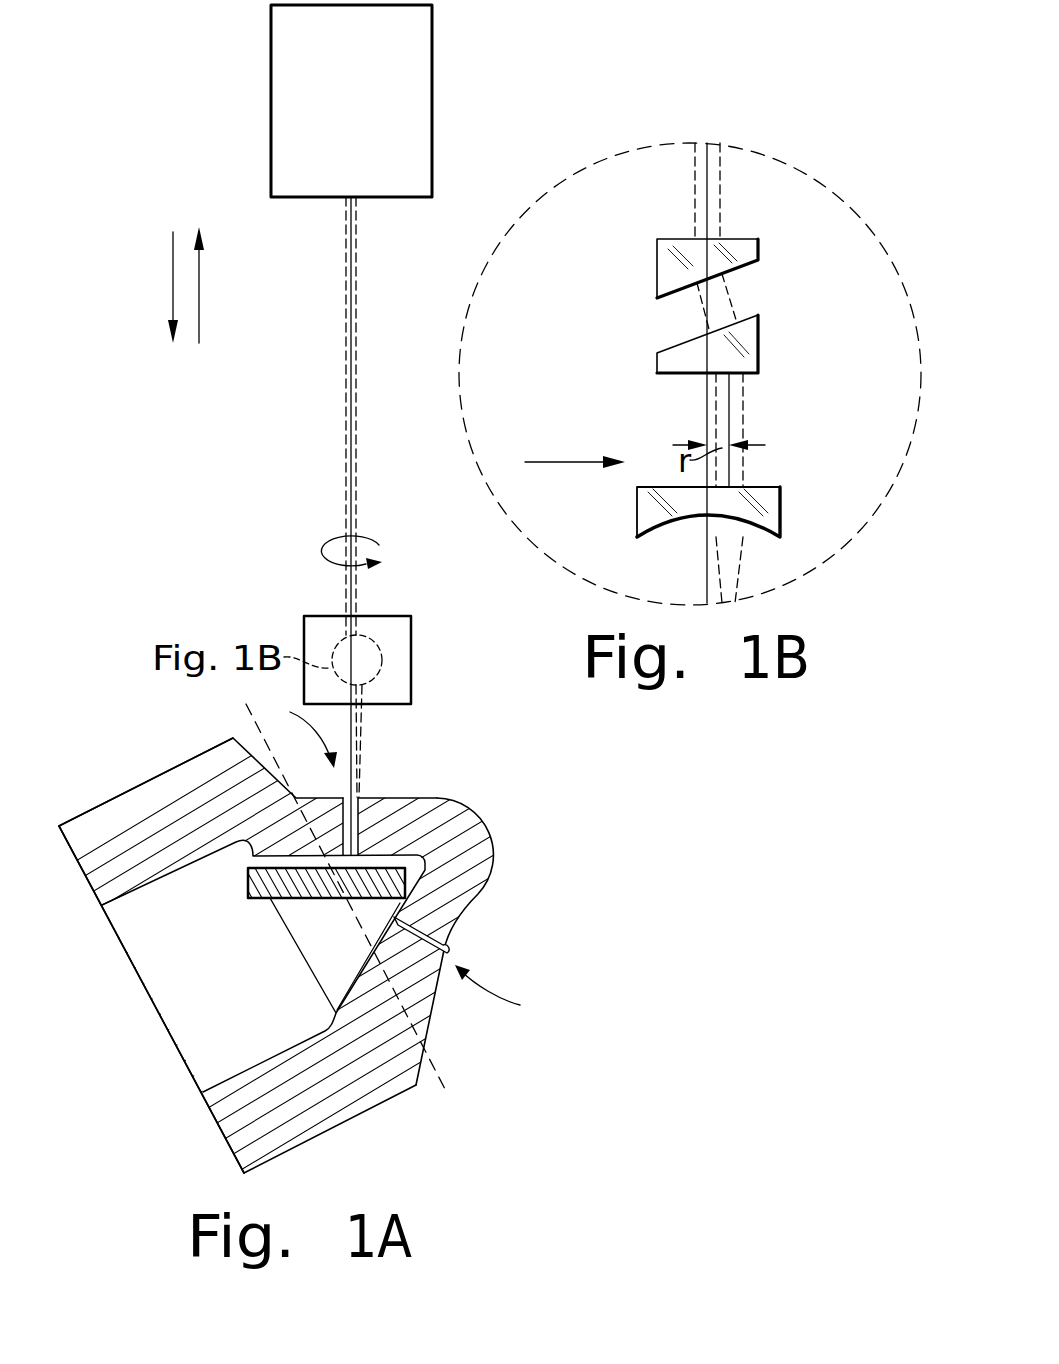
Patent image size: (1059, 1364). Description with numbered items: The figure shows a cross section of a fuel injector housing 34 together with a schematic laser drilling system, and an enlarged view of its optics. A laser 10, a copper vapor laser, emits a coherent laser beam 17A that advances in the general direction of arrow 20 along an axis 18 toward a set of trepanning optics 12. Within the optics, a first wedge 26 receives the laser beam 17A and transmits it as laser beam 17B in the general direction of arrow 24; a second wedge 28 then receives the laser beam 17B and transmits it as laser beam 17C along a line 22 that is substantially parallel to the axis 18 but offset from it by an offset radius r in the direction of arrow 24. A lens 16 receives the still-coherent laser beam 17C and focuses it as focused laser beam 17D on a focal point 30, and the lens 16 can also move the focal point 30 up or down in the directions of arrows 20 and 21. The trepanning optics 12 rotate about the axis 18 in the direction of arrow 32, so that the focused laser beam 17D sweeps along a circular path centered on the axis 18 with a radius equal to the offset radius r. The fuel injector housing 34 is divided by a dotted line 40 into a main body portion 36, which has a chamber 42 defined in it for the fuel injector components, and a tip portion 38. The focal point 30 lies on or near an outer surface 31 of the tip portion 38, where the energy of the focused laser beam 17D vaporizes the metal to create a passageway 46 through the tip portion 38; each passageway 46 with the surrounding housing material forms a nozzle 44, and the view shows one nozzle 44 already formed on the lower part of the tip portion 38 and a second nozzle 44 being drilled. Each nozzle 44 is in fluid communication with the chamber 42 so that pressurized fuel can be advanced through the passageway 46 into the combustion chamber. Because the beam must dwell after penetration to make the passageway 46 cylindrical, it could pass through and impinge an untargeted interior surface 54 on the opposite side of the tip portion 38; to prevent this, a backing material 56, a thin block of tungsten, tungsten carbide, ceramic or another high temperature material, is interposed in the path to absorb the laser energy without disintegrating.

In FIG. 1A, the laser 10 is at (403, 146).
In FIG. 1A, the trepanning optics 12 is at (428, 620).
In FIG. 1B, the lens 16 is at (780, 513).
In FIG. 1A, the laser beam 17A is at (356, 300).
In FIG. 1B, the laser beam 17A is at (692, 210).
In FIG. 1B, the laser beam 17B is at (733, 303).
In FIG. 1B, the laser beam 17C is at (745, 472).
In FIG. 1A, the focused laser beam 17D is at (362, 730).
In FIG. 1B, the focused laser beam 17D is at (742, 572).
In FIG. 1A, the axis 18 is at (345, 382).
In FIG. 1B, the axis 18 is at (707, 397).
In FIG. 1A, the arrow 20 is at (171, 292).
In FIG. 1A, the arrow 21 is at (200, 283).
In FIG. 1B, the line 22 is at (730, 420).
In FIG. 1B, the arrow 24 is at (562, 460).
In FIG. 1B, the first wedge 26 is at (657, 280).
In FIG. 1B, the second wedge 28 is at (758, 347).
In FIG. 1A, the focal point 30 is at (362, 797).
In FIG. 1A, the outer surface 31 is at (410, 797).
In FIG. 1A, the arrow 32 is at (321, 550).
In FIG. 1A, the fuel injector housing 34 is at (177, 766).
In FIG. 1A, the main body portion 36 is at (82, 796).
In FIG. 1A, the tip portion 38 is at (529, 945).
In FIG. 1A, the dotted line 40 is at (433, 1058).
In FIG. 1A, the chamber 42 is at (117, 905).
In FIG. 1A, the nozzle 44 is at (565, 858).
In FIG. 1A, the passageway 46 is at (343, 796).
In FIG. 1A, the untargeted interior surface 54 is at (360, 967).
In FIG. 1A, the backing material 56 is at (248, 898).